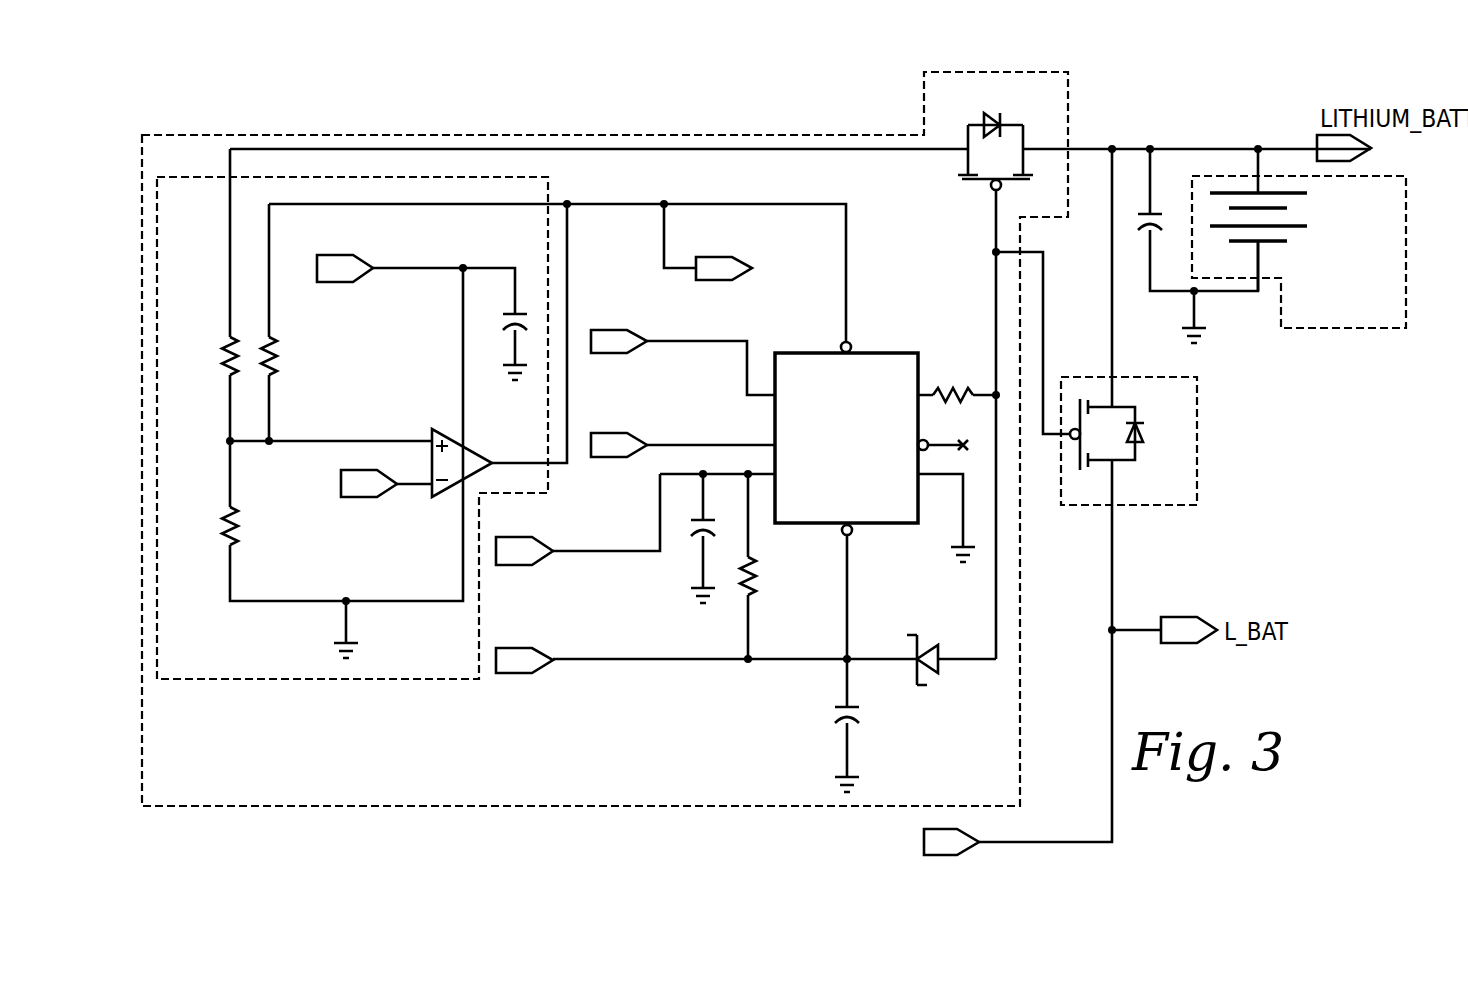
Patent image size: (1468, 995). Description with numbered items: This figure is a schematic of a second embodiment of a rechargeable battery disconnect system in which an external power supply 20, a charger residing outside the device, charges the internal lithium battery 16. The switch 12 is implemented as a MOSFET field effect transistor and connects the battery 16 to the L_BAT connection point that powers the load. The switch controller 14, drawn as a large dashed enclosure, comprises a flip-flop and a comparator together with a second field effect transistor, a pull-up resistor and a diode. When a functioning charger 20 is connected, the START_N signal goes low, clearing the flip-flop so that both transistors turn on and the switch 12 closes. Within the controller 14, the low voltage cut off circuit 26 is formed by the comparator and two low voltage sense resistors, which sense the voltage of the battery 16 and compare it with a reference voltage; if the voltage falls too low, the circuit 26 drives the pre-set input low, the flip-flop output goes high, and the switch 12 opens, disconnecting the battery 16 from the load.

The switch 12 is at (1197, 459).
The switch controller 14 is at (650, 135).
The lithium battery 16 is at (1337, 328).
The external power supply 20 is at (797, 848).
The low voltage cut off circuit 26 is at (268, 679).